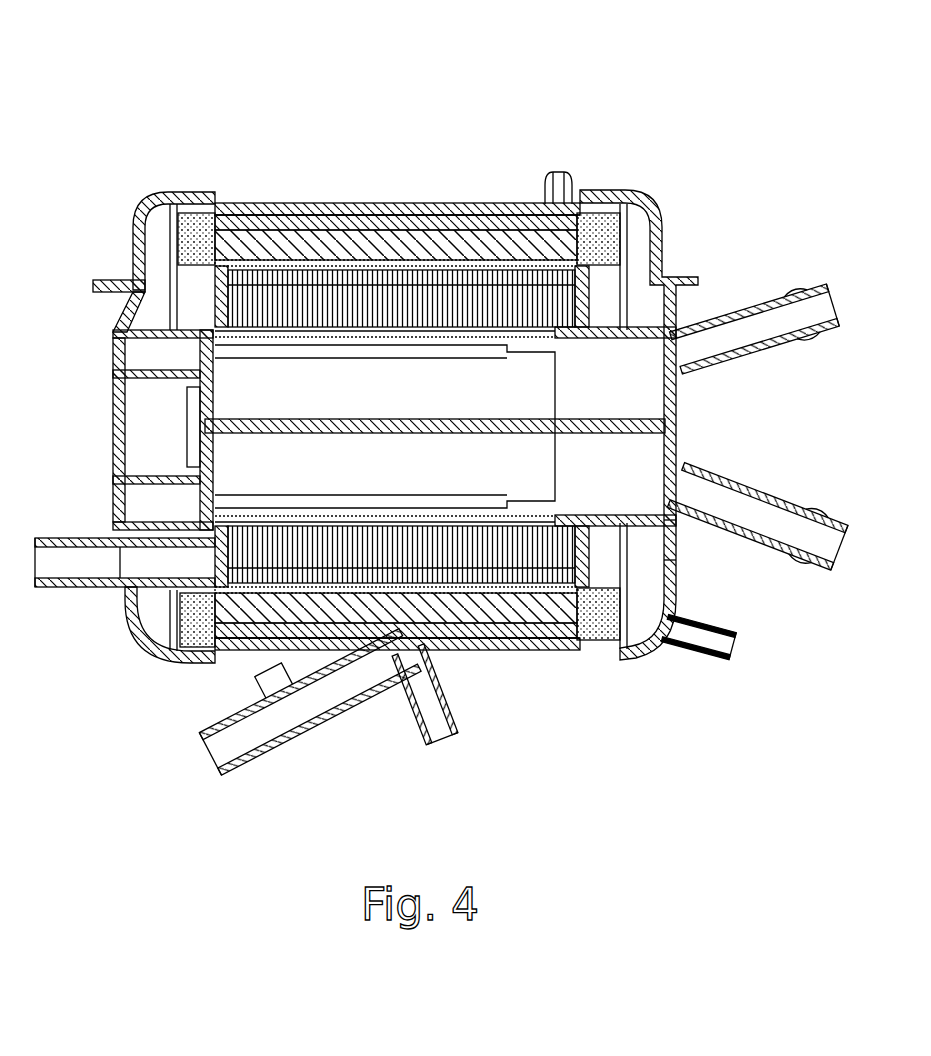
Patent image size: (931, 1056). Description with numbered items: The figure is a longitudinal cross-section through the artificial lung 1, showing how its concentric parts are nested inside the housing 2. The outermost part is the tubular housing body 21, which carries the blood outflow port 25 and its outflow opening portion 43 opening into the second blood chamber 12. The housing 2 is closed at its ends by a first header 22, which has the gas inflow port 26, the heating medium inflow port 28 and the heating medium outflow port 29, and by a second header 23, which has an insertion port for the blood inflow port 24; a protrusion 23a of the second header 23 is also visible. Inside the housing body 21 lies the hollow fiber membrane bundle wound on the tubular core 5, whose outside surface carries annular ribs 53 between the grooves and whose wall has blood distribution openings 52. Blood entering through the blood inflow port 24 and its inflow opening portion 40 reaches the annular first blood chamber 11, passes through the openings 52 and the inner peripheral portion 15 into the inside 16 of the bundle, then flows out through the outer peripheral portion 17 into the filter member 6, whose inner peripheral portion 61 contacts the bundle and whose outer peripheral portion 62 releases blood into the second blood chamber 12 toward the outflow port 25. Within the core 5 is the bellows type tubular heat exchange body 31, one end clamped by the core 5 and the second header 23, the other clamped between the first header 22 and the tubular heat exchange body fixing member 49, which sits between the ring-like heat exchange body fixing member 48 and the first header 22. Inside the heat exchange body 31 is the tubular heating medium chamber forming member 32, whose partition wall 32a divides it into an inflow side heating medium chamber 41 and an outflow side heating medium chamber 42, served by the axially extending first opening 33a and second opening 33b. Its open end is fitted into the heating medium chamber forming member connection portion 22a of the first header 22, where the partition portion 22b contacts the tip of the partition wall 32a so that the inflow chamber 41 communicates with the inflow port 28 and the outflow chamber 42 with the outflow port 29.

The artificial lung 1 is at (693, 88).
The housing 2 is at (603, 187).
The tubular core 5 is at (540, 600).
The filter member 6 is at (455, 215).
The first blood chamber 11 is at (386, 262).
The second blood chamber 12 is at (470, 225).
The inner peripheral portion of the tubular hollow fiber membrane bundle 15 is at (128, 288).
The inside of the tubular hollow fiber membrane bundle 16 is at (215, 250).
The outer peripheral portion of the tubular hollow fiber membrane bundle 17 is at (313, 215).
The tubular housing body 21 is at (217, 205).
The first header 22 is at (645, 208).
The heating medium chamber forming member connection portion 22a is at (715, 365).
The partition portion 22b is at (672, 438).
The second header 23 is at (133, 232).
The end wall protrusion 23a is at (160, 385).
The blood inflow port 24 is at (65, 570).
The blood outflow port 25 is at (252, 732).
The gas inflow port 26 is at (712, 655).
The heating medium inflow port 28 is at (800, 305).
The heating medium outflow port 29 is at (782, 505).
The tubular heat exchange body 31 is at (426, 272).
The tubular heating medium chamber forming member 32 is at (570, 212).
The partition wall 32a is at (195, 455).
The first opening 33a is at (272, 345).
The second opening 33b is at (290, 512).
The inflow opening portion 40 is at (183, 640).
The inflow side heating medium chamber 41 is at (523, 387).
The outflow side heating medium chamber 42 is at (449, 468).
The outflow opening portion 43 is at (380, 656).
The ring-like heat exchange body fixing member 48 is at (665, 582).
The tubular heat exchange body fixing member 49 is at (680, 545).
The blood distribution opening 52 is at (348, 228).
The annular rib 53 is at (525, 215).
The inner peripheral portion of the filter member 61 is at (497, 235).
The outer peripheral portion of the filter member 62 is at (243, 215).